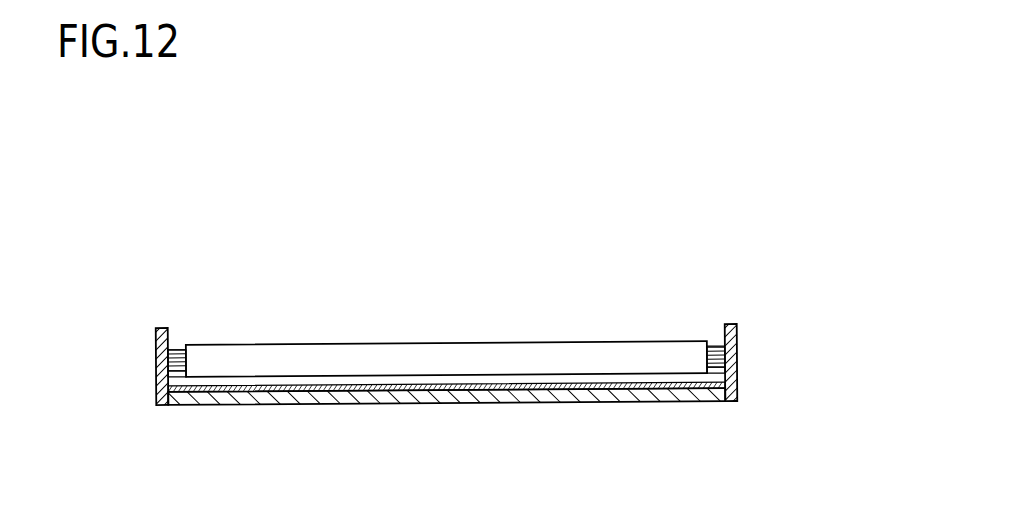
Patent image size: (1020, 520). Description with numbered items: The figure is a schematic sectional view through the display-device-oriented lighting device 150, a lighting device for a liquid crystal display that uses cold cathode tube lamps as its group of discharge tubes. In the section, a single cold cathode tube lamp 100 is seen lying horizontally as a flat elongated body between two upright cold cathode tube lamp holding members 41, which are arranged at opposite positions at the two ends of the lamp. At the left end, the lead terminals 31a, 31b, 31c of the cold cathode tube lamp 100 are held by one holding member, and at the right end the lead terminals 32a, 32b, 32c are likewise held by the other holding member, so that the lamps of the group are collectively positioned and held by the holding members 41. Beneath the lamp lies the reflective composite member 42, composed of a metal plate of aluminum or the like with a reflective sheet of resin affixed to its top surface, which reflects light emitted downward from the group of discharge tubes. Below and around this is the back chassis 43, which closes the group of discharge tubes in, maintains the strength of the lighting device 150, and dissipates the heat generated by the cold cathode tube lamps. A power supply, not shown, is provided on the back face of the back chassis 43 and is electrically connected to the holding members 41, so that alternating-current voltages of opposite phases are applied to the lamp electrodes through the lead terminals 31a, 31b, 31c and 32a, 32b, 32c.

The display-device-oriented lighting device 150 is at (789, 259).
The cold cathode tube lamp 100 is at (453, 357).
The lead terminal 31a is at (177, 348).
The lead terminal 31b is at (157, 358).
The lead terminal 31c is at (172, 372).
The lead terminal 32a is at (714, 349).
The lead terminal 32b is at (738, 357).
The lead terminal 32c is at (738, 380).
The cold cathode tube lamp holding member 41 is at (156, 395).
The reflective composite member 42 is at (507, 403).
The back chassis 43 is at (439, 403).